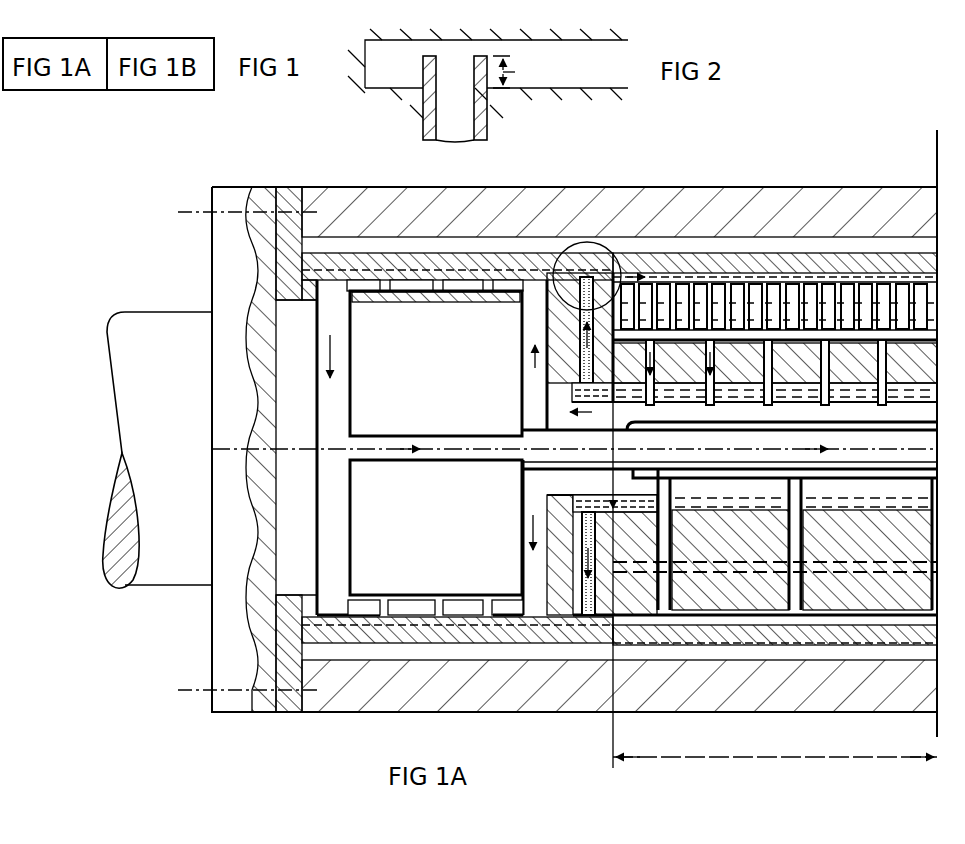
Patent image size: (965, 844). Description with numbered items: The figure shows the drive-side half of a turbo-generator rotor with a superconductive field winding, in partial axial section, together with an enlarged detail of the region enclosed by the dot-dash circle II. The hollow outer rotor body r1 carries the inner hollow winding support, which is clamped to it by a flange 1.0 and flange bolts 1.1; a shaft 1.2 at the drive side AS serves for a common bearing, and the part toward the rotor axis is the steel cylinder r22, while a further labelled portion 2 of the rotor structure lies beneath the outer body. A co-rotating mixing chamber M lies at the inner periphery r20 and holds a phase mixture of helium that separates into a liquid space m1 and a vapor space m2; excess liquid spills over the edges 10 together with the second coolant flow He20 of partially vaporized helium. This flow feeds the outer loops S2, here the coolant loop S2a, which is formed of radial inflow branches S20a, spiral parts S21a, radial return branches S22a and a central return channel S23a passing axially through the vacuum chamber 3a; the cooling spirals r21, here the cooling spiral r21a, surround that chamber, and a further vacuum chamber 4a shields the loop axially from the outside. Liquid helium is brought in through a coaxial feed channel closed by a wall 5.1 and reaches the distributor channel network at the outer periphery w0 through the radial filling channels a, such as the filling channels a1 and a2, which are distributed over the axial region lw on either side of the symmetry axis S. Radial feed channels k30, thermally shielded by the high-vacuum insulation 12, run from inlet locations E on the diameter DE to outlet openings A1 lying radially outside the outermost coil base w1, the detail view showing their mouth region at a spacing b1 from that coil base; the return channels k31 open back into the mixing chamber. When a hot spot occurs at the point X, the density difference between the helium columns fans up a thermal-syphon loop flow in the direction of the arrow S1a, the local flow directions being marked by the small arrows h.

In FIG. 1A, the flange 1.0 is at (228, 247).
In FIG. 1A, the flange bolts 1.1 is at (192, 215).
In FIG. 1A, the shaft 1.2 is at (155, 316).
In FIG. 1A, the drive side AS is at (197, 601).
In FIG. 1A, the housing wall m is at (252, 447).
In FIG. 1A, the coolant loop S2a is at (367, 268).
In FIG. 1A, the radial return branches S22a is at (333, 326).
In FIG. 1A, the spiral parts S21a is at (427, 291).
In FIG. 1A, the radial inflow branches S20a is at (537, 326).
In FIG. 1A, the vacuum chamber 3a is at (436, 363).
In FIG. 1A, the radial feed channels k30 is at (578, 380).
In FIG. 1A, the second coolant flow He20 is at (537, 416).
In FIG. 1A, the high-vacuum insulation 12 is at (580, 348).
In FIG. 1A, the inner periphery r20 is at (626, 393).
In FIG. 1A, the edges 10 is at (572, 398).
In FIG. 1A, the arrows h is at (556, 541).
In FIG. 1A, the dot-dash circle II is at (610, 243).
In FIG. 1A, the outlet openings A1 is at (592, 300).
In FIG. 1A, the flow arrow S1a is at (730, 160).
In FIG. 1A, the point X is at (735, 300).
In FIG. 1A, the inner stator sheath 2 is at (793, 250).
In FIG. 1A, the outer periphery w0 is at (870, 284).
In FIG. 1A, the symmetry axis S is at (937, 154).
In FIG. 1A, the liquid space m1 is at (742, 390).
In FIG. 1A, the vapor space m2 is at (798, 403).
In FIG. 1A, the return channels k31 is at (848, 397).
In FIG. 1A, the mixing chamber M is at (898, 403).
In FIG. 1A, the central return channel S23a is at (386, 452).
In FIG. 1A, the cooling spiral r21a is at (318, 514).
In FIG. 1A, the vacuum chamber 4a is at (298, 551).
In FIG. 1A, the diameter DE is at (613, 498).
In FIG. 1A, the inlet locations E is at (588, 508).
In FIG. 1A, the wall 5.1 is at (600, 405).
In FIG. 1A, the radial filling channel a1 is at (665, 540).
In FIG. 1A, the radial filling channel a2 is at (805, 538).
In FIG. 1A, the radial filling channels a is at (818, 600).
In FIG. 1A, the outer rotor body r1 is at (720, 688).
In FIG. 1A, the axial region lw is at (775, 640).
In FIG. 1A, the steel cylinder r22 is at (385, 627).
In FIG. 1A, the outer loops S2 is at (513, 617).
In FIG. 1A, the cooling spirals r21 is at (531, 612).
In FIG. 2, the radially outermost coil base w1 is at (548, 100).
In FIG. 2, the spacing b1 is at (517, 72).